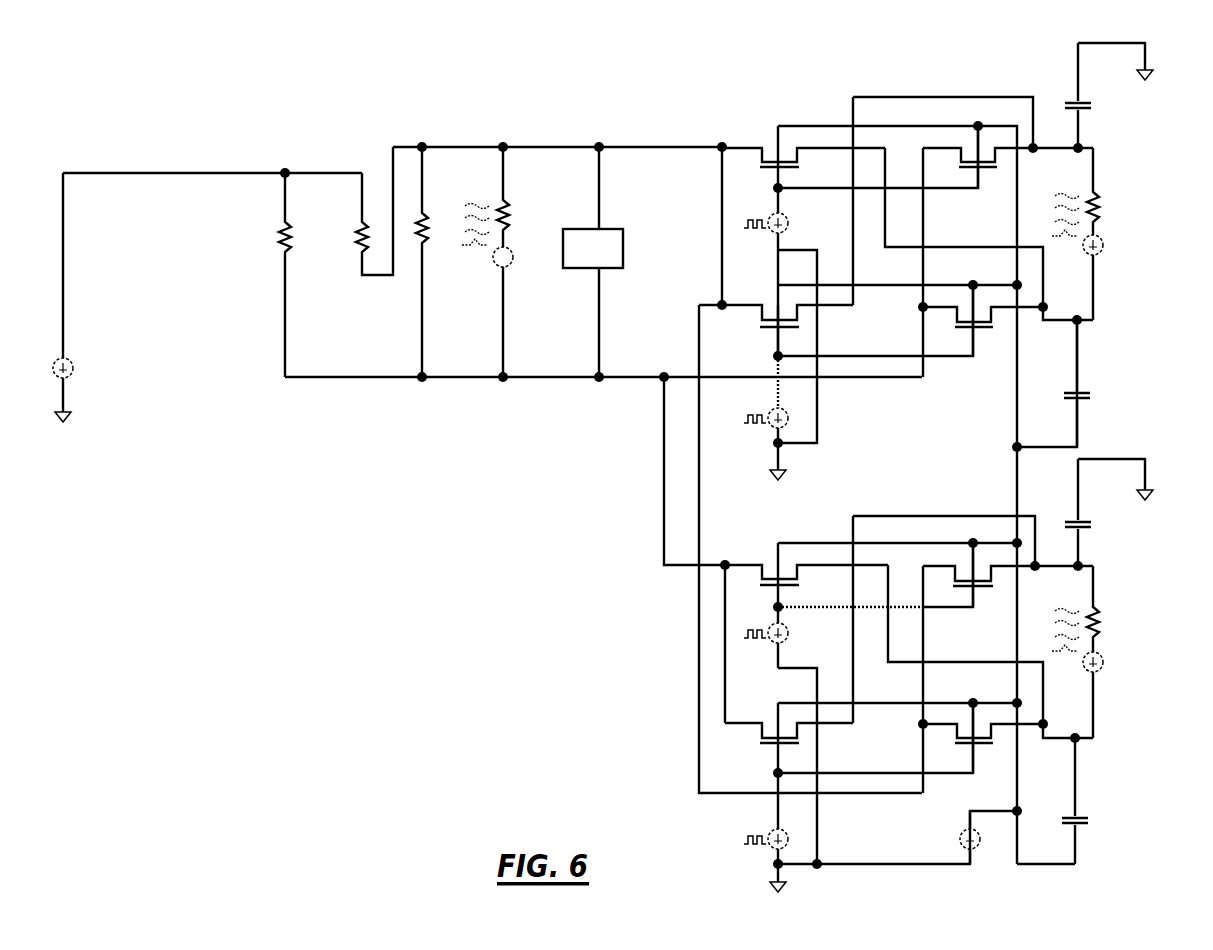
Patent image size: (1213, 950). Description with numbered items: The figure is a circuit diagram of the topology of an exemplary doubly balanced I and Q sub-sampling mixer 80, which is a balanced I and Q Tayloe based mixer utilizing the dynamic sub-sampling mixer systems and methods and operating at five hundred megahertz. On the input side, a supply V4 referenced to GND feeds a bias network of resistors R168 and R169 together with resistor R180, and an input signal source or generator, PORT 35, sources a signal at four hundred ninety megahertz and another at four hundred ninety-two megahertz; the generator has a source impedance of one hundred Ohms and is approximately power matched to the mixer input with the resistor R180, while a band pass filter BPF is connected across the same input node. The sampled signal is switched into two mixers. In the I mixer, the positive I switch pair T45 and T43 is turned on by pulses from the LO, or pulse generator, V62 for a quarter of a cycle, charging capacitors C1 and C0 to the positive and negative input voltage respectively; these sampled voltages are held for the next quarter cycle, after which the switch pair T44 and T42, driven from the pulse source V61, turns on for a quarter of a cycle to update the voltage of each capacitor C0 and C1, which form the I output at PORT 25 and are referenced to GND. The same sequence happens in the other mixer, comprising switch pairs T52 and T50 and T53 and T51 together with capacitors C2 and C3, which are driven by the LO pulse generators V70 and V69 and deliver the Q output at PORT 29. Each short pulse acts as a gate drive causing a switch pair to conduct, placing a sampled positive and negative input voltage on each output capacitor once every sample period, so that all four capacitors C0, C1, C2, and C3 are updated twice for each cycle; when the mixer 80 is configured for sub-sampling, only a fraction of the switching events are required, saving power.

The mixer 80 is at (686, 104).
The voltage source V4 is at (75, 292).
The ground GND is at (604, 467).
The resistor R168 is at (310, 275).
The resistor R169 is at (365, 211).
The resistor R180 is at (421, 262).
The port PORT 35 is at (521, 262).
The band pass filter BPF is at (593, 262).
The switch T45 is at (803, 236).
The switch T44 is at (776, 317).
The switch T43 is at (1008, 155).
The switch T42 is at (983, 320).
The LO V62 is at (785, 222).
The pulse voltage source V61 is at (781, 399).
The capacitor C1 is at (1094, 95).
The capacitor C0 is at (1092, 383).
The output port 25 PORT 25 is at (1117, 234).
The capacitor C2 is at (1095, 512).
The capacitor C3 is at (1091, 801).
The output port 29 PORT 29 is at (1117, 652).
The switch T50 is at (806, 605).
The switch T51 is at (789, 738).
The switch T52 is at (1008, 575).
The switch T53 is at (983, 738).
The LO V70 is at (755, 818).
The LO V69 is at (952, 837).